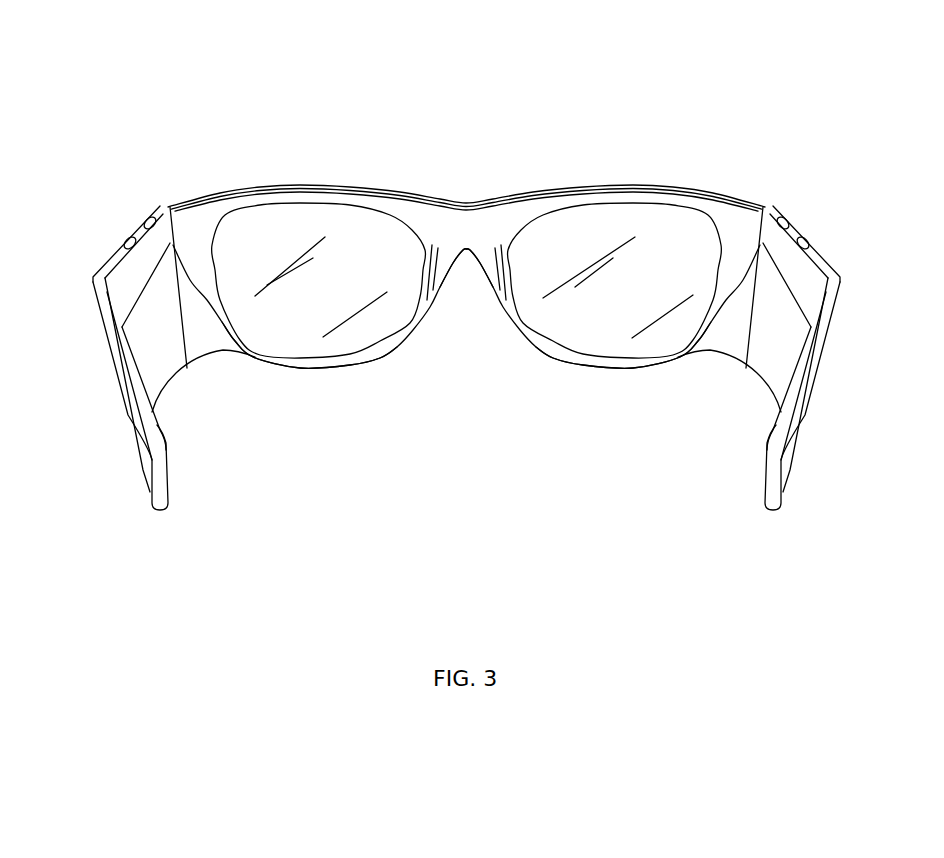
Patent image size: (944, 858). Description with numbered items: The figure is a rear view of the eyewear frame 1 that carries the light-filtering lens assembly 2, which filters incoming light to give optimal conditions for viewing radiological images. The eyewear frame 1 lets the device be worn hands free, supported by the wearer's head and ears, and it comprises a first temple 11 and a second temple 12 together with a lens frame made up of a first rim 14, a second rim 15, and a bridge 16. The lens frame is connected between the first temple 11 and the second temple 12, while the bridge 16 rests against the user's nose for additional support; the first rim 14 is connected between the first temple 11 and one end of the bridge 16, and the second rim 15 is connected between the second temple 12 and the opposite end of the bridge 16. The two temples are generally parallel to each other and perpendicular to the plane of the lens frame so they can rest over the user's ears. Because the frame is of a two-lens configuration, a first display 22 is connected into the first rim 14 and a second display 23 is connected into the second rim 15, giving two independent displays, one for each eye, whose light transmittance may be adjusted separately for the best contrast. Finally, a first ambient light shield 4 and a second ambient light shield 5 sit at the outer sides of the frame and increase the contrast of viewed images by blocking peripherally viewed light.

The eyewear frame 1 is at (494, 57).
The light-filtering lens assembly 2 is at (211, 239).
The first ambient light shield 4 is at (775, 367).
The second ambient light shield 5 is at (164, 372).
The first temple 11 is at (813, 277).
The second temple 12 is at (120, 280).
The first rim 14 is at (618, 366).
The second rim 15 is at (302, 366).
The bridge 16 is at (465, 237).
The first display 22 is at (617, 213).
The second display 23 is at (262, 227).